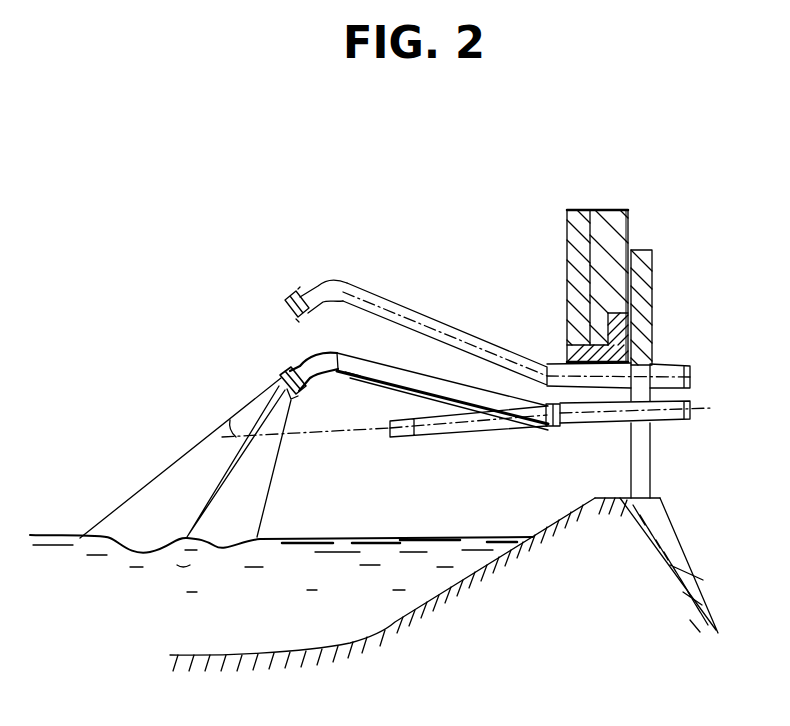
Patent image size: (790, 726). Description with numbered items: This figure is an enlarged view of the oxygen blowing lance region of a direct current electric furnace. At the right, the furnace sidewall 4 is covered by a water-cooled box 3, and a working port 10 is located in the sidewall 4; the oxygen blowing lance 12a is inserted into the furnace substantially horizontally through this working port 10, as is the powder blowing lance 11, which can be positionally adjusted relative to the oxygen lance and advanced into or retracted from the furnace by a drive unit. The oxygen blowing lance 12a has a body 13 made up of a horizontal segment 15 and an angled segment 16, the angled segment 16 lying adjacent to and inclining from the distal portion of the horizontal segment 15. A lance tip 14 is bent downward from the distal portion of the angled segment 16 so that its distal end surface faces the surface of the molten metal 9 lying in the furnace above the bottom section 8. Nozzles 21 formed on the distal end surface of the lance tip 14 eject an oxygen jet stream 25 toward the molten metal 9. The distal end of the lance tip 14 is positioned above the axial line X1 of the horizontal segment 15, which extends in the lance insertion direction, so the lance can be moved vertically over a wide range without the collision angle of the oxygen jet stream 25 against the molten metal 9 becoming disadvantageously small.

The water-cooled box 3 is at (652, 277).
The sidewall 4 is at (615, 227).
The bottom section 8 is at (497, 570).
The molten metal 9 is at (357, 606).
The working port 10 is at (648, 475).
The powder blowing lance 11 is at (468, 437).
The oxygen blowing lance 12a is at (408, 305).
The body 13 is at (483, 392).
The lance tip 14 is at (307, 358).
The horizontal segment 15 is at (600, 426).
The angled segment 16 is at (360, 379).
The nozzles 21 is at (281, 383).
The oxygen jet stream 25 is at (183, 527).
The axial line X1 is at (222, 408).